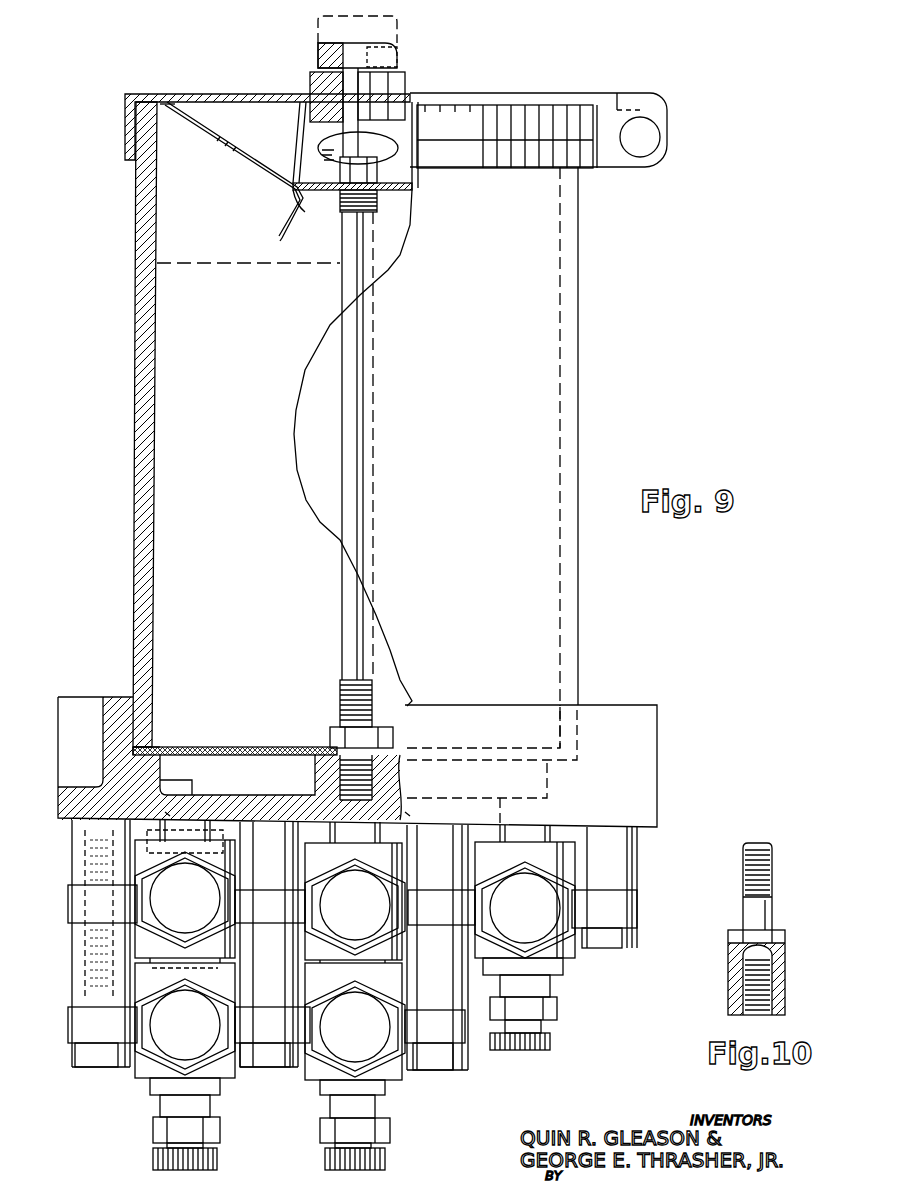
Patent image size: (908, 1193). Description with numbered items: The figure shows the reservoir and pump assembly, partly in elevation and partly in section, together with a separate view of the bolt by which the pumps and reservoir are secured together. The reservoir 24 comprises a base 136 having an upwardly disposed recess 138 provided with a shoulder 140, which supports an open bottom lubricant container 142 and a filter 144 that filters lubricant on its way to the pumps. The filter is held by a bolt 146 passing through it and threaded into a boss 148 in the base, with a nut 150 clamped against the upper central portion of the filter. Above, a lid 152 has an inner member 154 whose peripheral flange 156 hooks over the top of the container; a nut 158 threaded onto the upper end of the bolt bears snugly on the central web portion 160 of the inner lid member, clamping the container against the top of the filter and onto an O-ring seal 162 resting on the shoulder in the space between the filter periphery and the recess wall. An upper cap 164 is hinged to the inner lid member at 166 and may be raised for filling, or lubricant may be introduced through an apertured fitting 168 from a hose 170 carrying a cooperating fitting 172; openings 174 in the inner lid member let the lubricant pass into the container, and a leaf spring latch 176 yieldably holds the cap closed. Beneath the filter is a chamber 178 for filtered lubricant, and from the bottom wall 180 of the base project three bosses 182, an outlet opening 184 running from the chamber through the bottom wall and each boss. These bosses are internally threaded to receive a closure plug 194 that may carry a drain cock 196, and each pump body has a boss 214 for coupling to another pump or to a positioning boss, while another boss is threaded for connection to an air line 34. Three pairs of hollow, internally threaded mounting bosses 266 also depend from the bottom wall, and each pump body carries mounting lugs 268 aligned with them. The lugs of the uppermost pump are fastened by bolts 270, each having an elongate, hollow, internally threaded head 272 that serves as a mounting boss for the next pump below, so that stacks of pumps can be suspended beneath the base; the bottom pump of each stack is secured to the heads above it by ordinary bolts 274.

In FIG. 9, the reservoir 24 is at (607, 388).
In FIG. 9, the air line 34 is at (215, 1108).
In FIG. 9, the base 136 is at (657, 738).
In FIG. 9, the recess 138 is at (150, 712).
In FIG. 9, the shoulder 140 is at (165, 748).
In FIG. 9, the lubricant container 142 is at (136, 554).
In FIG. 9, the filter 144 is at (255, 748).
In FIG. 9, the bolt 146 is at (376, 632).
In FIG. 9, the boss 148 is at (392, 780).
In FIG. 9, the nut 150 is at (395, 740).
In FIG. 9, the lid 152 is at (496, 180).
In FIG. 9, the inner lid member 154 is at (197, 130).
In FIG. 9, the peripheral flange 156 is at (128, 135).
In FIG. 9, the nut 158 is at (380, 175).
In FIG. 9, the central web portion 160 is at (396, 216).
In FIG. 9, the O-ring seal 162 is at (133, 752).
In FIG. 9, the upper cap 164 is at (507, 105).
In FIG. 9, the hinge 166 is at (660, 137).
In FIG. 9, the apertured fitting 168 is at (403, 88).
In FIG. 9, the hose 170 is at (398, 32).
In FIG. 9, the cooperating fitting 172 is at (318, 52).
In FIG. 9, the openings 174 is at (270, 165).
In FIG. 9, the leaf spring latch 176 is at (300, 238).
In FIG. 9, the chamber 178 is at (295, 787).
In FIG. 9, the bottom wall 180 is at (243, 802).
In FIG. 9, the bosses 182 is at (305, 838).
In FIG. 9, the outlet opening 184 is at (165, 812).
In FIG. 9, the closure plug 194 is at (153, 1132).
In FIG. 9, the drain cock 196 is at (218, 1160).
In FIG. 9, the boss 214 is at (305, 862).
In FIG. 9, the mounting bosses 266 is at (72, 838).
In FIG. 9, the mounting lugs 268 is at (72, 908).
In FIG. 9, the bolt 270 is at (85, 860).
In FIG. 10, the bolt 270 is at (765, 920).
In FIG. 9, the head 272 is at (80, 955).
In FIG. 10, the head 272 is at (770, 982).
In FIG. 9, the bolts 274 is at (110, 1067).